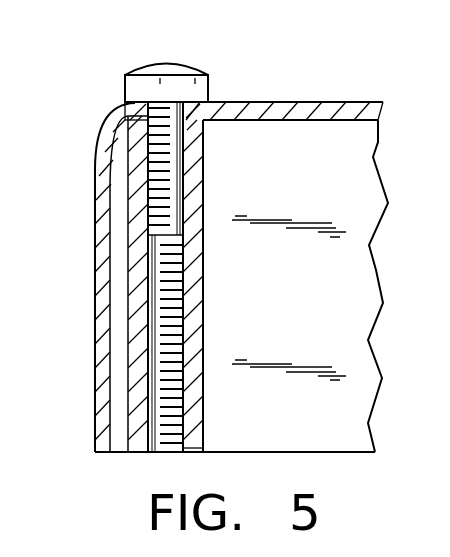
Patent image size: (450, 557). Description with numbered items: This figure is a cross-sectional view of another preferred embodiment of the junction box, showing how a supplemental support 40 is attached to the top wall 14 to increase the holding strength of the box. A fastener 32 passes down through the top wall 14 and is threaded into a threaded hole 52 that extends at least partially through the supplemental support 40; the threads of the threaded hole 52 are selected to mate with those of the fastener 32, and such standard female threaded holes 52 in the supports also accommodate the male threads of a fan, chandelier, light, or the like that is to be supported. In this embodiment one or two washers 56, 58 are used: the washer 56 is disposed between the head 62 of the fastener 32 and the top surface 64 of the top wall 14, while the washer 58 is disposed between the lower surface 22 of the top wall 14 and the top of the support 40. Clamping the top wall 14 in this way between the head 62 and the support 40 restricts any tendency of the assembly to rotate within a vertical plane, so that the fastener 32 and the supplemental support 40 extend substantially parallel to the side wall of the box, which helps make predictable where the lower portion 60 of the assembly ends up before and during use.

The top wall 14 is at (380, 107).
The lower face of top wall 22 is at (362, 121).
The fastener 32 is at (210, 63).
The supplemental support 40 is at (210, 292).
The threaded hole 52 is at (165, 455).
The washer 56 is at (125, 97).
The washer 58 is at (122, 126).
The lower portion 60 is at (205, 441).
The head 62 is at (210, 83).
The top surface 64 is at (302, 102).